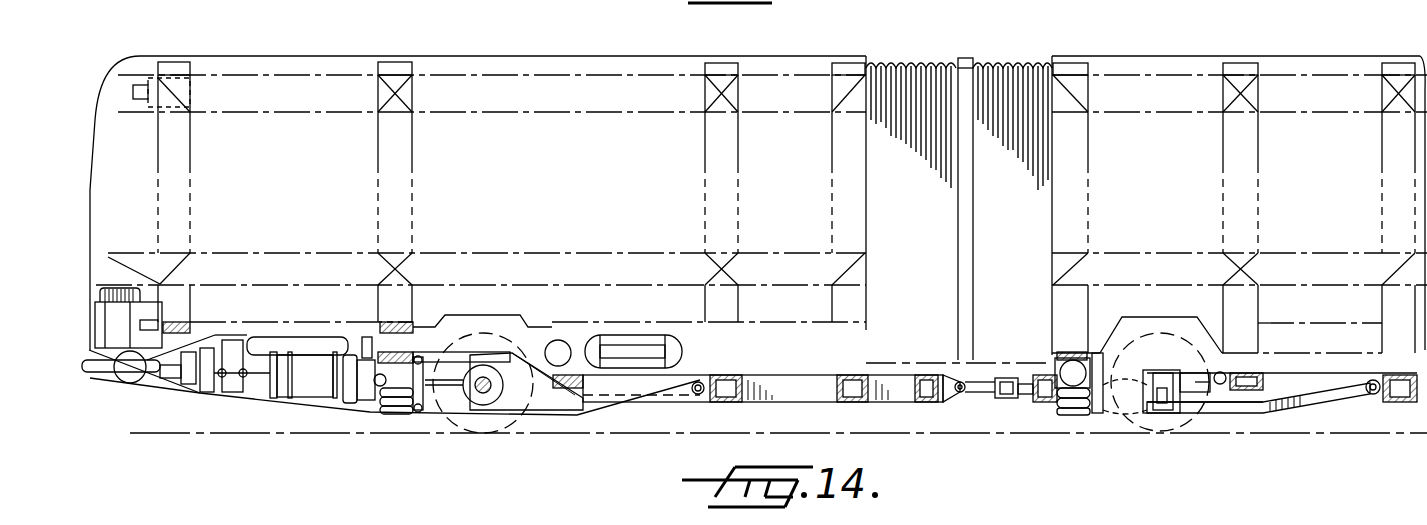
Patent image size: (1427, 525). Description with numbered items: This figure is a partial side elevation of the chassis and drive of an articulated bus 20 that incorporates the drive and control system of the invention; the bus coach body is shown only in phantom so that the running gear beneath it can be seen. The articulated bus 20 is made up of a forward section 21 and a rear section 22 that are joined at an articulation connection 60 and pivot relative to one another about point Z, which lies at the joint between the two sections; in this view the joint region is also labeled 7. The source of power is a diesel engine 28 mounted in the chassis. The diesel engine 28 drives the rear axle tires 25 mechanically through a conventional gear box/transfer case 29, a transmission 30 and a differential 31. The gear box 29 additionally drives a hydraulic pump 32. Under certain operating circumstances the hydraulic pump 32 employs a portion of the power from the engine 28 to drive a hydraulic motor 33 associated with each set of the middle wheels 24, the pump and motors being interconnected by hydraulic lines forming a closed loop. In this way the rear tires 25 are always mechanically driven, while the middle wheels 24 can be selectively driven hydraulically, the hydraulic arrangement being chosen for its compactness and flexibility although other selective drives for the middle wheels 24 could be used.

The articulated bus 20 is at (1341, 52).
The forward section 21 is at (1182, 60).
The rear section 22 is at (593, 60).
The articulation joint 7 is at (961, 394).
The articulation connection 60 is at (1013, 406).
The middle wheels 24 is at (1177, 425).
The rear axle tires 25 is at (522, 425).
The diesel engine 28 is at (243, 392).
The gear box/transfer case 29 is at (212, 392).
The transmission 30 is at (295, 395).
The differential 31 is at (465, 393).
The hydraulic pump 32 is at (183, 372).
The hydraulic motor 33 is at (1205, 390).